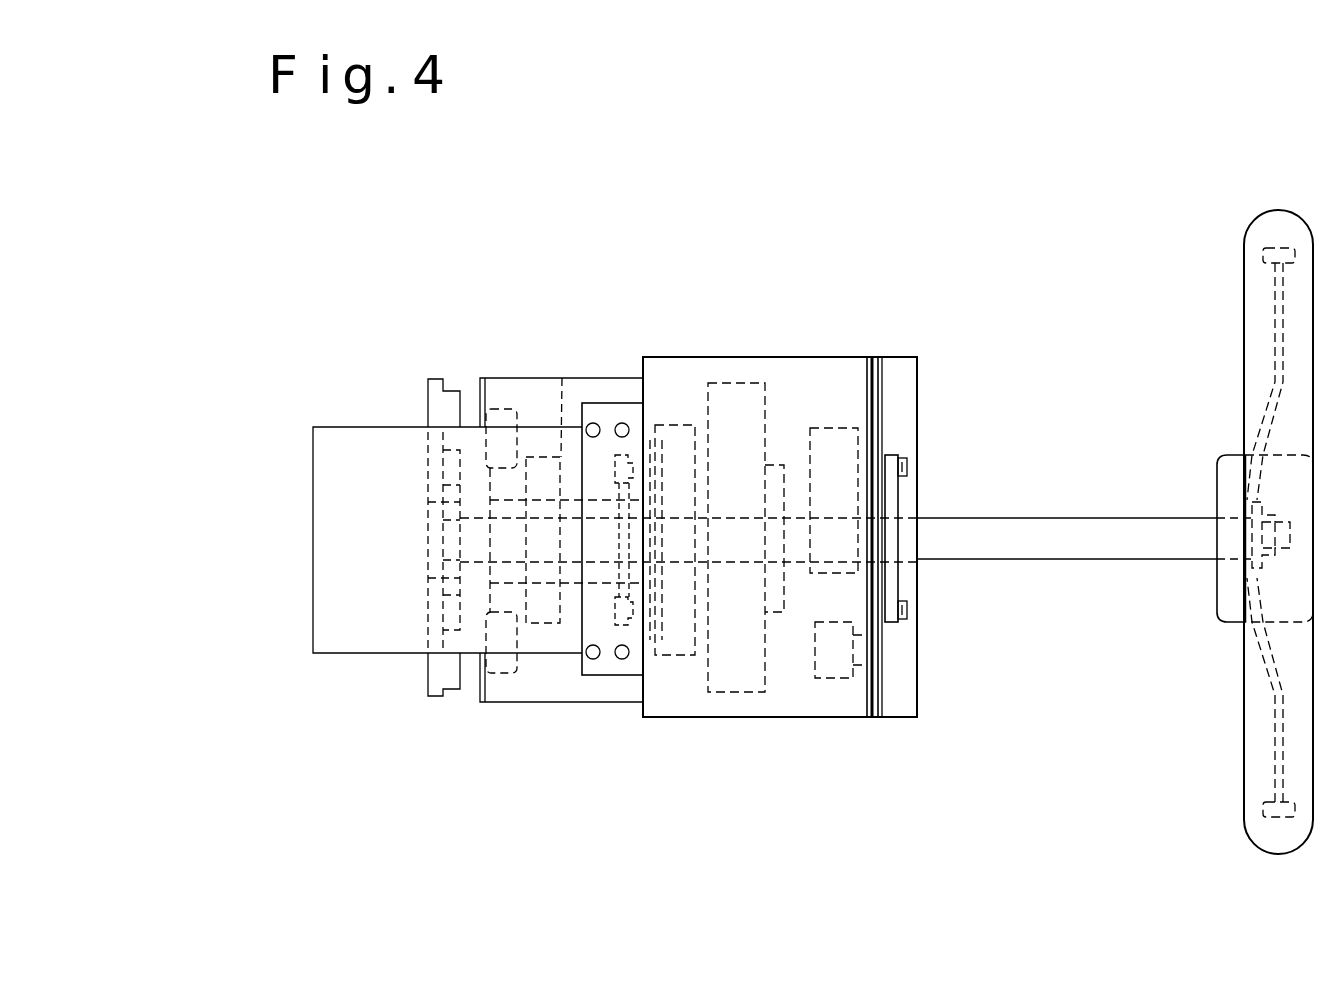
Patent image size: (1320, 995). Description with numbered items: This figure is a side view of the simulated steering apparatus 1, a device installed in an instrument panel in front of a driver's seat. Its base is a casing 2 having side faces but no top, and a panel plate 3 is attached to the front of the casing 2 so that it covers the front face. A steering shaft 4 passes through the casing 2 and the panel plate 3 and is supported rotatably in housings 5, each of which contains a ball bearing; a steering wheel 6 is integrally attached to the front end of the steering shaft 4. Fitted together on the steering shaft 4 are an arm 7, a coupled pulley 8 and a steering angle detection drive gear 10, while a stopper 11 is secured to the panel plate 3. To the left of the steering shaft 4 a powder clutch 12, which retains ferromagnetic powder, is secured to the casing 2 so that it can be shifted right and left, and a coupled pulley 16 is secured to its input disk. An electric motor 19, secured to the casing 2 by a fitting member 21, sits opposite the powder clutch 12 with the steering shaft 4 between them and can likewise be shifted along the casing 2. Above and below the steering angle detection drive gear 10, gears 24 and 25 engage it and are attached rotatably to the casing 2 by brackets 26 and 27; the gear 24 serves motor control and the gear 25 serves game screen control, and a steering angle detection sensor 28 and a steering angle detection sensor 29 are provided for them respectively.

The simulated steering apparatus 1 is at (1020, 287).
The casing 2 is at (777, 357).
The panel plate 3 is at (880, 357).
The steering shaft 4 is at (1030, 528).
The housing 5 is at (886, 455).
The steering wheel 6 is at (1268, 852).
The arm 7 is at (835, 428).
The coupled pulley 8 is at (728, 383).
The steering angle detection drive gear 10 is at (428, 550).
The stopper 11 is at (833, 680).
The powder clutch 12 is at (563, 378).
The coupled pulley 16 is at (668, 425).
The electric motor 19 is at (348, 427).
The fitting member 21 is at (622, 403).
The steering angle detection drive gear for controlling a motor 24 is at (432, 379).
The steering angle detection drive gear for controlling a screen 25 is at (437, 697).
The bracket 26 is at (530, 378).
The bracket 27 is at (565, 702).
The steering angle detection sensor for controlling a motor 28 is at (492, 378).
The steering angle detection sensor for controlling a game screen 29 is at (503, 675).